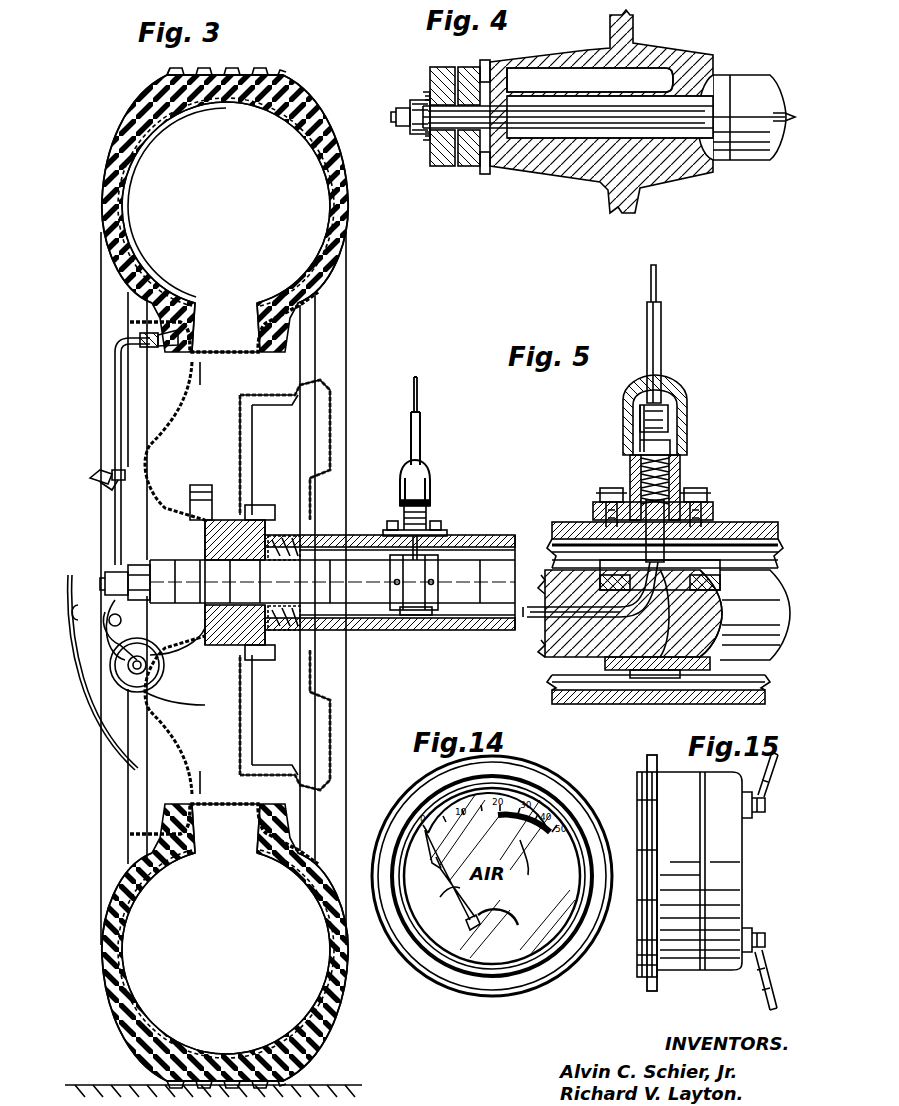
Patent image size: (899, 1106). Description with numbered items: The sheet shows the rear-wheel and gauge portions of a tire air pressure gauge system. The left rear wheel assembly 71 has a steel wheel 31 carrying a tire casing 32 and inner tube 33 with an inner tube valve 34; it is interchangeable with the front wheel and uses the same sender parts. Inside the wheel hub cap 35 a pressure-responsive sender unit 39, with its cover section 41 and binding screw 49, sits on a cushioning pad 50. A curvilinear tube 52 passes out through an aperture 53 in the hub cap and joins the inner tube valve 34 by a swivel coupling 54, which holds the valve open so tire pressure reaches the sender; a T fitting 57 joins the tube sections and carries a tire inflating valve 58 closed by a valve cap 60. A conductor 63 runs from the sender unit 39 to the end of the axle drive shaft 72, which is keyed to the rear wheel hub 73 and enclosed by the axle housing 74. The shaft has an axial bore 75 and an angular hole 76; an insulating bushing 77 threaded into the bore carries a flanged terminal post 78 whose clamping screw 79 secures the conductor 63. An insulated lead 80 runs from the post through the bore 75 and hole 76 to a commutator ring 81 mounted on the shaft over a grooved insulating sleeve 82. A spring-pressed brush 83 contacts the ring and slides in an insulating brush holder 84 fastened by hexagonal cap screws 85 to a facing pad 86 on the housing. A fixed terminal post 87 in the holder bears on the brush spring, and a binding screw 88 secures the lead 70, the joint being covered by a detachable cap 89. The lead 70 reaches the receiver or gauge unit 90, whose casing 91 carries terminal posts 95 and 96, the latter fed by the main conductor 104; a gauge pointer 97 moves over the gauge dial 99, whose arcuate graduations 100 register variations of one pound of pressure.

In FIG. 3, the steel wheel 31 is at (140, 300).
In FIG. 3, the tire casing 32 is at (100, 182).
In FIG. 3, the inner tube 33 is at (128, 214).
In FIG. 3, the inner tube valve 34 is at (165, 335).
In FIG. 3, the wheel hub cap 35 is at (78, 612).
In FIG. 3, the sender unit 39 is at (190, 700).
In FIG. 3, the cover section 41 is at (120, 677).
In FIG. 3, the binding or clamping screw 49 is at (128, 672).
In FIG. 3, the shock absorbing block or pad 50 is at (90, 672).
In FIG. 3, the tire air pressure conducting tube 52 is at (115, 395).
In FIG. 3, the aperture 53 is at (115, 468).
In FIG. 3, the swivel coupling 54 is at (140, 340).
In FIG. 3, the T fitting 57 is at (175, 530).
In FIG. 3, the tire inflating valve 58 is at (100, 484).
In FIG. 3, the valve cap 60 is at (92, 476).
In FIG. 3, the conductor 63 is at (105, 635).
In FIG. 3, the insulated conductor or lead 70 is at (420, 440).
In FIG. 5, the insulated conductor or lead 70 is at (662, 346).
In FIG. 15, the insulated conductor or lead 70 is at (758, 990).
In FIG. 3, the left rear wheel assembly 71 is at (127, 96).
In FIG. 3, the axle drive shaft 72 is at (372, 600).
In FIG. 4, the axle drive shaft 72 is at (745, 142).
In FIG. 5, the axle drive shaft 72 is at (742, 640).
In FIG. 3, the rear wheel hub 73 is at (235, 625).
In FIG. 4, the rear wheel hub 73 is at (598, 172).
In FIG. 3, the axle housing 74 is at (488, 530).
In FIG. 5, the axle housing 74 is at (738, 530).
In FIG. 4, the axial bore 75 is at (556, 148).
In FIG. 5, the axial bore 75 is at (582, 640).
In FIG. 5, the angular hole 76 is at (690, 595).
In FIG. 3, the insulating bushing 77 is at (115, 580).
In FIG. 4, the insulating bushing 77 is at (420, 132).
In FIG. 4, the terminal post 78 is at (410, 112).
In FIG. 3, the binding or clamping screw 79 is at (105, 582).
In FIG. 4, the binding or clamping screw 79 is at (393, 120).
In FIG. 4, the insulated conductor or lead 80 is at (545, 114).
In FIG. 5, the insulated conductor or lead 80 is at (580, 600).
In FIG. 3, the commutator ring 81 is at (410, 610).
In FIG. 5, the commutator ring 81 is at (658, 680).
In FIG. 3, the insulating sleeve 82 is at (430, 612).
In FIG. 5, the insulating sleeve 82 is at (618, 672).
In FIG. 3, the brush 83 is at (410, 556).
In FIG. 5, the brush 83 is at (715, 565).
In FIG. 3, the brush holder 84 is at (432, 500).
In FIG. 5, the brush holder 84 is at (682, 478).
In FIG. 3, the hexagonal cap screws 85 is at (392, 519).
In FIG. 5, the hexagonal cap screws 85 is at (612, 485).
In FIG. 3, the facing pad 86 is at (390, 532).
In FIG. 5, the facing pad 86 is at (596, 508).
In FIG. 5, the fixed terminal post 87 is at (642, 415).
In FIG. 5, the binding screw 88 is at (670, 412).
In FIG. 3, the detachable cap 89 is at (428, 470).
In FIG. 5, the detachable cap 89 is at (672, 392).
In FIG. 14, the receiver or gauge unit 90 is at (458, 992).
In FIG. 15, the receiver or gauge unit 90 is at (642, 985).
In FIG. 14, the receiver unit casing 91 is at (530, 985).
In FIG. 15, the receiver unit casing 91 is at (688, 975).
In FIG. 15, the terminal post 95 is at (772, 915).
In FIG. 15, the terminal post 96 is at (766, 812).
In FIG. 14, the gauge pointer 97 is at (451, 880).
In FIG. 14, the gauge dial 99 is at (535, 922).
In FIG. 14, the graduations 100 is at (542, 858).
In FIG. 15, the main conductor 104 is at (760, 760).